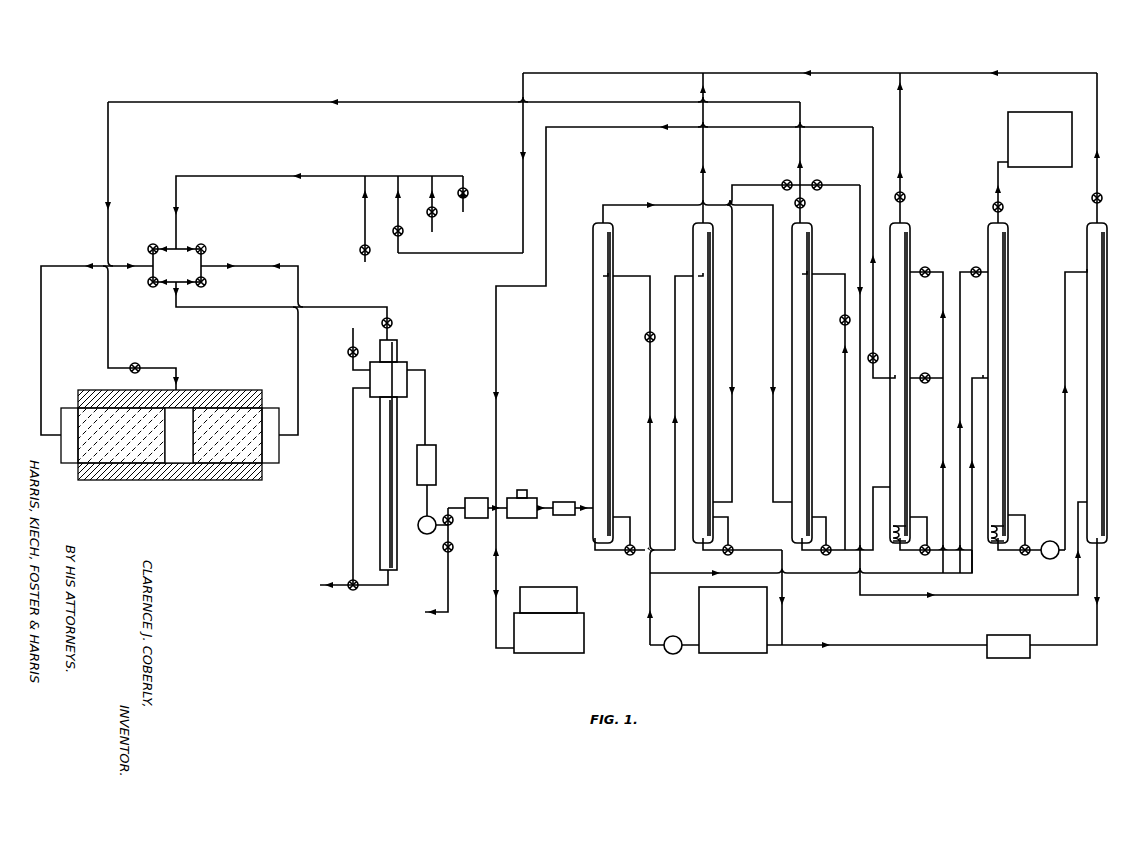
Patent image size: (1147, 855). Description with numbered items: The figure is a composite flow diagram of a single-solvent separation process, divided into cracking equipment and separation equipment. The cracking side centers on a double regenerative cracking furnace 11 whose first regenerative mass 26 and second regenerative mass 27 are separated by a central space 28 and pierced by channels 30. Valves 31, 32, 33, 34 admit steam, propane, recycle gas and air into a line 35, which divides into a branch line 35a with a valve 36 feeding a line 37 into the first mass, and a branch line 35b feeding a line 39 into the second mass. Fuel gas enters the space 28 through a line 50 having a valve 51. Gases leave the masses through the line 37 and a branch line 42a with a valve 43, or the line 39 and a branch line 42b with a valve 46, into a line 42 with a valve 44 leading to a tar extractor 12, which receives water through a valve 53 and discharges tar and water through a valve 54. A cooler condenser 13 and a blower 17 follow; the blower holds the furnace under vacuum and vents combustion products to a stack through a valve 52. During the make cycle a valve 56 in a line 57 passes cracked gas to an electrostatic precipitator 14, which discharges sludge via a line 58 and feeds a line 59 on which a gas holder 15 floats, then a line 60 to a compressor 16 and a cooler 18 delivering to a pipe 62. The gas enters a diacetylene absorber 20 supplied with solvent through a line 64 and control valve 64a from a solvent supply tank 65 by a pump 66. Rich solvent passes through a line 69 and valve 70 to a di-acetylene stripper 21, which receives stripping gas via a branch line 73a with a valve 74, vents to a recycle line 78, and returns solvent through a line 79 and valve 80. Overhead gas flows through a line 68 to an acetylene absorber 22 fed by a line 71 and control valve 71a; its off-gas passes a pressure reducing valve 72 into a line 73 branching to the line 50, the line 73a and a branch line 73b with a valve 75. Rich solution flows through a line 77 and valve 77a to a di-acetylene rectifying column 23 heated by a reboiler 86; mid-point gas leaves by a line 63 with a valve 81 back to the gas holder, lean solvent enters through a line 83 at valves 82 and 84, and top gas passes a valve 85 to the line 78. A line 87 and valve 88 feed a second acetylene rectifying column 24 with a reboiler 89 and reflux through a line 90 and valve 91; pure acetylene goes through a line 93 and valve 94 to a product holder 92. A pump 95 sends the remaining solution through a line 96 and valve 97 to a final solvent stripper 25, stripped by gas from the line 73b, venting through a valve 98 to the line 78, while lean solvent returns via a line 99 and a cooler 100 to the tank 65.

The double regenerative cracking furnace 11 is at (258, 390).
The tar extractor 12 is at (408, 362).
The cooler condenser 13 is at (436, 460).
The electrostatic precipitator 14 is at (484, 498).
The gas holder 15 is at (576, 588).
The compressor 16 is at (526, 487).
The blower 17 is at (423, 533).
The cooler 18 is at (567, 498).
The diacetylene absorber 20 is at (593, 246).
The di-acetylene stripper 21 is at (693, 228).
The acetylene absorber 22 is at (812, 230).
The di-acetylene rectifying column 23 is at (910, 230).
The second acetylene rectifying column 24 is at (1008, 234).
The final solvent stripper 25 is at (1107, 236).
The first regenerative mass 26 is at (126, 465).
The second regenerative mass 27 is at (234, 463).
The central space 28 is at (184, 463).
The channels 30 is at (130, 437).
The steam valve 31 is at (469, 193).
The propane valve 32 is at (435, 209).
The recycle gas valve 33 is at (403, 231).
The air valve 34 is at (360, 248).
The line 35 is at (261, 176).
The branch line 35a is at (172, 249).
The branch line 35b is at (182, 249).
The valve 36 is at (148, 249).
The line 37 is at (62, 266).
The line 39 is at (280, 265).
The line 42 is at (336, 306).
The branch line 42a is at (164, 288).
The branch line 42b is at (180, 285).
The valve 43 is at (148, 284).
The valve 44 is at (393, 323).
The valve 46 is at (206, 282).
The line 50 is at (108, 175).
The valve 51 is at (133, 363).
The valve 52 is at (444, 552).
The valve 53 is at (348, 352).
The valve 54 is at (354, 590).
The valve 56 is at (446, 515).
The line 57 is at (458, 504).
The line 58 is at (480, 520).
The line 59 is at (498, 565).
The line 60 is at (497, 526).
The pipe 62 is at (584, 518).
The line 63 is at (553, 187).
The line 64 is at (648, 331).
The control valve 64a is at (648, 340).
The solvent supply tank 65 is at (737, 652).
The pump 66 is at (667, 652).
The line 68 is at (655, 205).
The line 69 is at (675, 285).
The valve 70 is at (441, 253).
The line 71 is at (845, 372).
The control valve 71a is at (838, 320).
The pressure reducing valve 72 is at (806, 205).
The line 73 is at (794, 205).
The branch line 73a is at (743, 180).
The branch line 73b is at (860, 185).
The valve 74 is at (787, 181).
The valve 75 is at (817, 182).
The line 77 is at (845, 520).
The valve 77a is at (824, 553).
The recycle line 78 is at (773, 74).
The line 79 is at (780, 550).
The valve 80 is at (726, 552).
The valve 81 is at (876, 354).
The valve 82 is at (924, 374).
The line 83 is at (943, 442).
The valve 84 is at (926, 269).
The valve 85 is at (905, 197).
The reboiler 86 is at (894, 544).
The line 87 is at (972, 378).
The valve 88 is at (923, 553).
The reboiler 89 is at (994, 544).
The line 90 is at (960, 346).
The valve 91 is at (973, 271).
The product holder 92 is at (1055, 112).
The line 93 is at (998, 175).
The valve 94 is at (1003, 207).
The pump 95 is at (1048, 541).
The line 96 is at (1065, 453).
The valve 97 is at (1024, 554).
The valve 98 is at (1102, 199).
The line 99 is at (830, 645).
The cooler 100 is at (1020, 630).